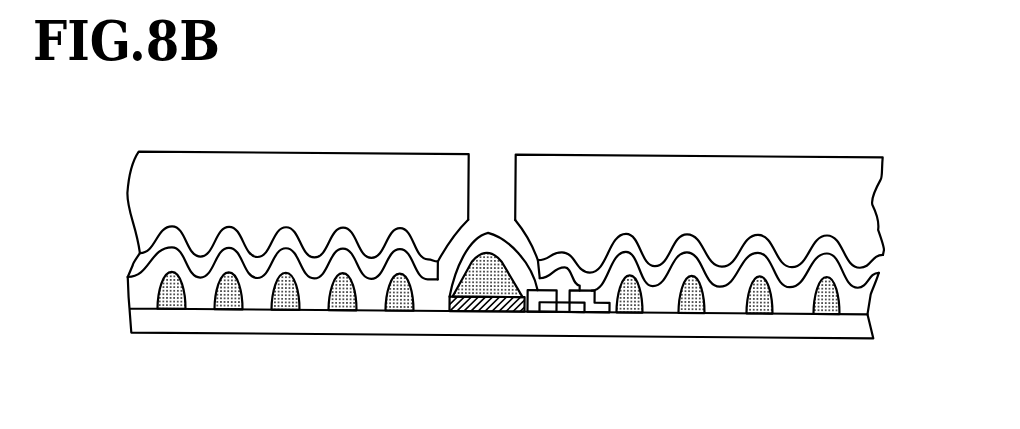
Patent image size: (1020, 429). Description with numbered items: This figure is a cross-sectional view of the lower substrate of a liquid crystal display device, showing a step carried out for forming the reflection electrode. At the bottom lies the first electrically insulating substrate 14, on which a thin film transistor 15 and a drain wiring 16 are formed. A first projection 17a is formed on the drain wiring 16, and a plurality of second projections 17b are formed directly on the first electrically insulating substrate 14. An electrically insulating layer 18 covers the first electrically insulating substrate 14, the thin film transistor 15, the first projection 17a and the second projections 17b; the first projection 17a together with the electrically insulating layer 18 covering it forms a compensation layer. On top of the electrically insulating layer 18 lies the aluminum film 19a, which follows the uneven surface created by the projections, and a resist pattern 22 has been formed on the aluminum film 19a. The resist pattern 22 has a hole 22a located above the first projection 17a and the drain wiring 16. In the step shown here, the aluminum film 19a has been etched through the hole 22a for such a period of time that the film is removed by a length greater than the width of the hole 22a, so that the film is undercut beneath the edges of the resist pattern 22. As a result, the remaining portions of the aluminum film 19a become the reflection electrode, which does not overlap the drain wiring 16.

The first electrically insulating substrate 14 is at (795, 326).
The thin film transistor 15 is at (613, 345).
The drain wiring 16 is at (486, 312).
The first projection 17a is at (490, 246).
The second projections 17b is at (266, 298).
The electrically insulating layer 18 is at (522, 265).
The aluminum film 19a is at (236, 229).
The resist pattern 22 is at (328, 163).
The hole 22a is at (536, 240).